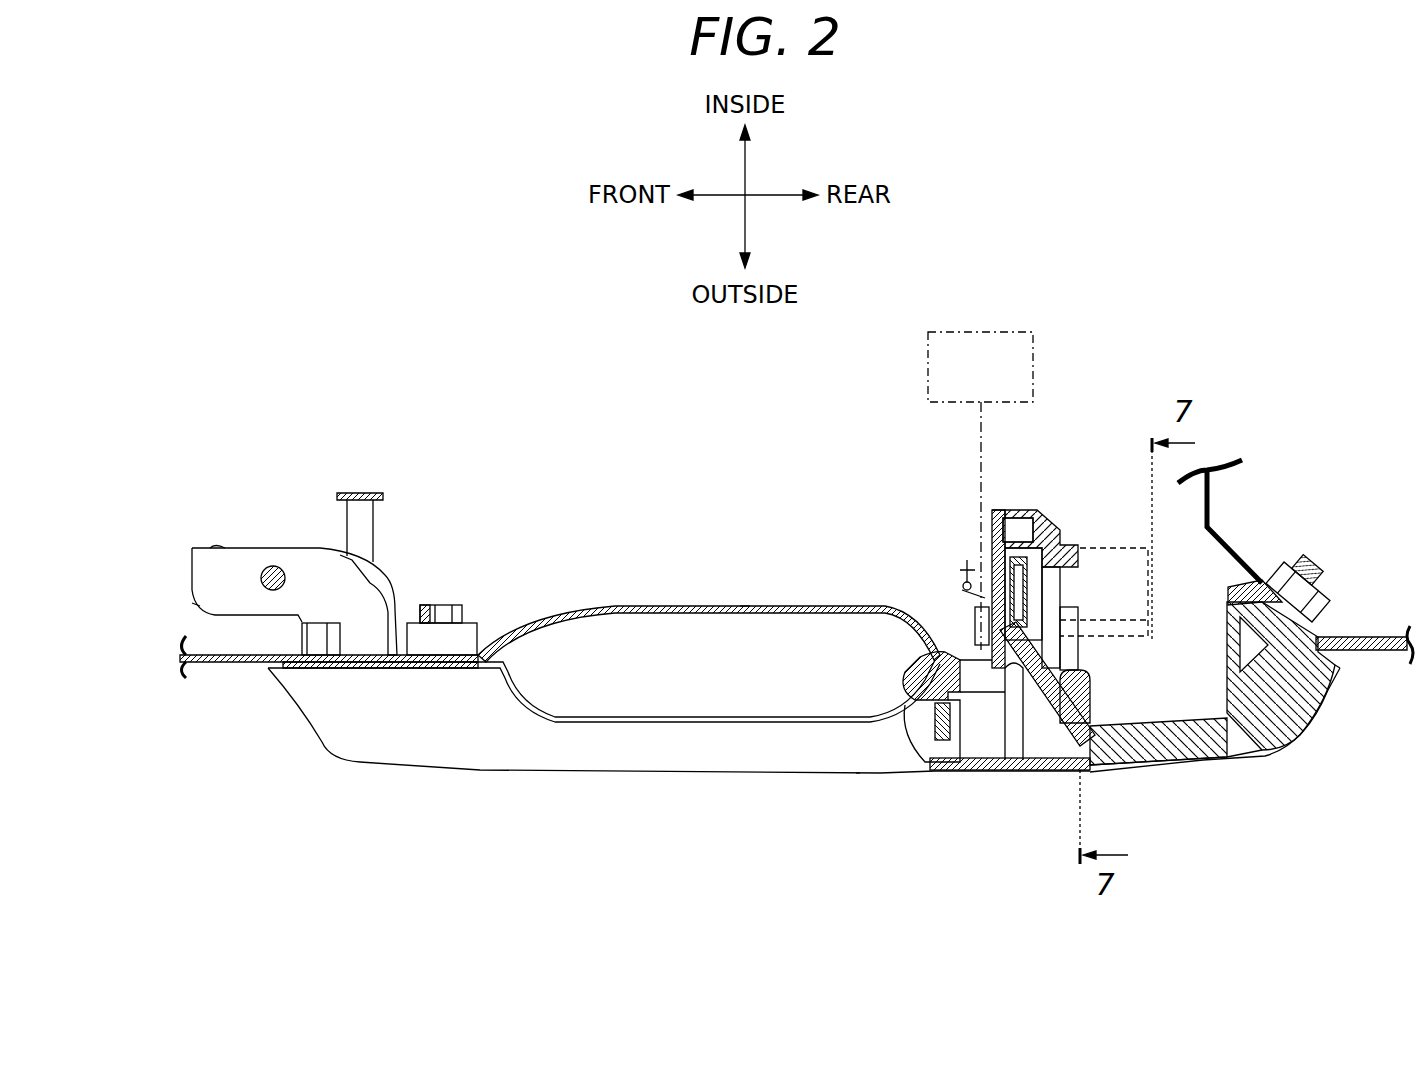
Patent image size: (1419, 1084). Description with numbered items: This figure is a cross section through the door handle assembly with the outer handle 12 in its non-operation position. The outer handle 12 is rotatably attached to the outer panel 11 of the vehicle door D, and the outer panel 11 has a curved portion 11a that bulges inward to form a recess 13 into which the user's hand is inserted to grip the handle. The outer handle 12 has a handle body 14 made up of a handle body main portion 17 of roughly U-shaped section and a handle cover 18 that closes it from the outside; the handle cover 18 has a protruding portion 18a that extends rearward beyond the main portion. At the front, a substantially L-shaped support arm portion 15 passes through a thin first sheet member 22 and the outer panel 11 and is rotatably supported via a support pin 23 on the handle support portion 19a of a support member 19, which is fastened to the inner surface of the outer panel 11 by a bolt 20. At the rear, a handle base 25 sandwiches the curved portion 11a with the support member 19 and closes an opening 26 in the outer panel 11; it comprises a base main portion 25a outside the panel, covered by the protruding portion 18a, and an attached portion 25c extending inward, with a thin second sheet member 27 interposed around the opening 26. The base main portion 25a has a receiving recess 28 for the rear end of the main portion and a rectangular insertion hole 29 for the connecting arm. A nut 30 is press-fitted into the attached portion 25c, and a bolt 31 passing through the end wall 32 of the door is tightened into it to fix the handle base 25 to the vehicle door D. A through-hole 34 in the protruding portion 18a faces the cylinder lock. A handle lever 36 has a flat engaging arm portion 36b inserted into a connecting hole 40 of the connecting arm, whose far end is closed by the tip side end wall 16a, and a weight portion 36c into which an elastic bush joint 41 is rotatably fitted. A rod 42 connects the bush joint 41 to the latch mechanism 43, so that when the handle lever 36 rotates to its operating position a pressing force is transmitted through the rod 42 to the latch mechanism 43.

The vehicle door D is at (208, 669).
The outer panel 11 is at (236, 665).
The curved portion 11a is at (745, 606).
The outer handle 12 is at (857, 774).
The recess 13 is at (730, 672).
The handle body 14 is at (679, 791).
The support arm portion 15 is at (302, 565).
The tip side end wall 16a is at (1040, 522).
The handle body main portion 17 is at (705, 722).
The handle cover 18 is at (768, 773).
The protruding portion 18a is at (1320, 706).
The support member 19 is at (470, 622).
The handle support portion 19a is at (193, 604).
The bolt 20 is at (440, 605).
The first sheet member 22 is at (337, 662).
The support pin 23 is at (266, 566).
The handle base 25 is at (1222, 673).
The base main portion 25a is at (1268, 755).
The attached portion 25c is at (1318, 636).
The opening 26 is at (972, 650).
The second sheet member 27 is at (1334, 672).
The receiving recess 28 is at (1043, 770).
The insertion hole 29 is at (1003, 690).
The nut 30 is at (1238, 592).
The bolt 31 is at (1305, 590).
The end wall 32 is at (1240, 556).
The through-hole 34 is at (1150, 768).
The handle lever 36 is at (1078, 522).
The engaging arm portion 36b is at (968, 572).
The weight portion 36c is at (1120, 546).
The connecting hole 40 is at (975, 590).
The bush joint 41 is at (966, 556).
The rod 42 is at (976, 443).
The latch mechanism 43 is at (966, 382).